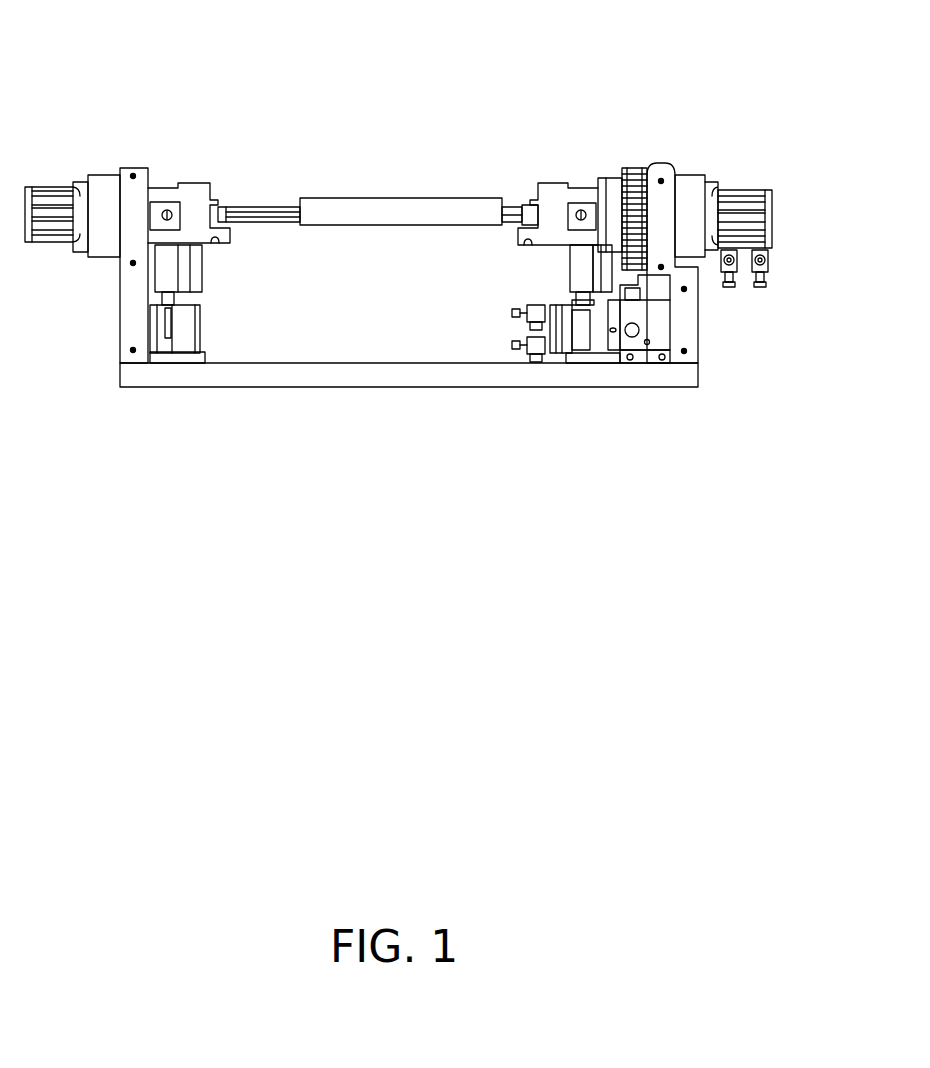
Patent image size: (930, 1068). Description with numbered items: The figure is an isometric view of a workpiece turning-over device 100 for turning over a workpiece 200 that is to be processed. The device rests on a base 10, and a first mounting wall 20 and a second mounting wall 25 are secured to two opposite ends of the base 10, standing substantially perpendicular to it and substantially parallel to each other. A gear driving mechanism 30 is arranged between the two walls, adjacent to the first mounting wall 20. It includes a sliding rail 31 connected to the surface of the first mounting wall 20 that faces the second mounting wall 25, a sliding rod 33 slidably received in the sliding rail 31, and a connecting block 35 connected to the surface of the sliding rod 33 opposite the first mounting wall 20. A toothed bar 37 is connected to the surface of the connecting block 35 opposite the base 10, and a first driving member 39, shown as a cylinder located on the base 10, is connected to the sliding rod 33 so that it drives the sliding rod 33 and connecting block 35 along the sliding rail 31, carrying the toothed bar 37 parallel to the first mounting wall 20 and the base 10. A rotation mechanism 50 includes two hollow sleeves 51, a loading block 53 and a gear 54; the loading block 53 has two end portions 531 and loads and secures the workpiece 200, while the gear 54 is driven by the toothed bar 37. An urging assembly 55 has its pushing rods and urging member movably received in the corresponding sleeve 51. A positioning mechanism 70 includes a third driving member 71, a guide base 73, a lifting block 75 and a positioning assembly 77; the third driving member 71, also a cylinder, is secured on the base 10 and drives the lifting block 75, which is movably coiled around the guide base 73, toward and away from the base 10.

The workpiece turning-over device 100 is at (185, 73).
The workpiece 200 is at (350, 172).
The base 10 is at (306, 375).
The first mounting wall 20 is at (688, 274).
The second mounting wall 25 is at (133, 322).
The gear driving mechanism 30 is at (765, 300).
The sliding rail 31 is at (658, 319).
The sliding rod 33 is at (652, 299).
The connecting block 35 is at (628, 303).
The toothed bar 37 is at (628, 276).
The first driving member 39 is at (637, 343).
The rotation mechanism 50 is at (702, 153).
The hollow sleeve 51 is at (163, 197).
The loading block 53 is at (265, 238).
The end portion 531 is at (517, 198).
The gear 54 is at (636, 183).
The urging assembly 55 is at (755, 200).
The positioning mechanism 70 is at (437, 243).
The third driving member 71 is at (563, 322).
The guide base 73 is at (583, 343).
The lifting block 75 is at (577, 253).
The positioning assembly 77 is at (568, 297).